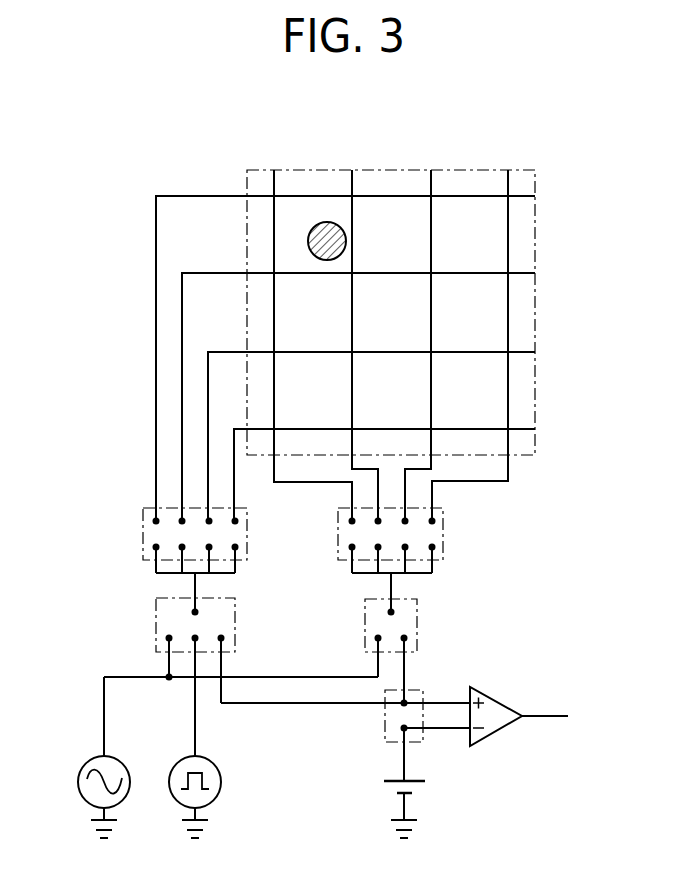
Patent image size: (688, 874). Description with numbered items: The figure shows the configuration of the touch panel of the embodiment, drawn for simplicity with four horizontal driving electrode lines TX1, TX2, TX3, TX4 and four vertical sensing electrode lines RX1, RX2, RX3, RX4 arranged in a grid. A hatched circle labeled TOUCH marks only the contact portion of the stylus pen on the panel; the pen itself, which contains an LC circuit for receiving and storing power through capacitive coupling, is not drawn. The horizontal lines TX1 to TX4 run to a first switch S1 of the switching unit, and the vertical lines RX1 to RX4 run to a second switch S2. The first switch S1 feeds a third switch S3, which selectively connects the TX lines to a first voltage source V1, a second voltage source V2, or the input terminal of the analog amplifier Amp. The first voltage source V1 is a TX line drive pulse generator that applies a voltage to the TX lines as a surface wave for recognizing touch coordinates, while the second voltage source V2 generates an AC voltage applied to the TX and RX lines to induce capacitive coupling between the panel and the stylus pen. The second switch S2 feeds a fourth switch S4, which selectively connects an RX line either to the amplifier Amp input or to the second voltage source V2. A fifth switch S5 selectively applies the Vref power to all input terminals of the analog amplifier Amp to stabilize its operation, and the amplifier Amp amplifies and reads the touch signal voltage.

The sensing electrode line RX1 is at (306, 332).
The sensing electrode line RX2 is at (358, 332).
The sensing electrode line RX3 is at (427, 332).
The sensing electrode line RX4 is at (479, 332).
The driving electrode line TX1 is at (365, 353).
The driving electrode line TX2 is at (378, 391).
The driving electrode line TX3 is at (391, 431).
The driving electrode line TX4 is at (404, 469).
The contact portion TOUCH is at (293, 237).
The first switch S1 is at (181, 560).
The second switch S2 is at (406, 560).
The third switch S3 is at (181, 650).
The fourth switch S4 is at (405, 651).
The fifth switch S5 is at (413, 735).
The analog amplifier Amp is at (519, 716).
The first voltage source V1 is at (209, 738).
The second voltage source V2 is at (90, 757).
The Vref power Vref is at (424, 806).